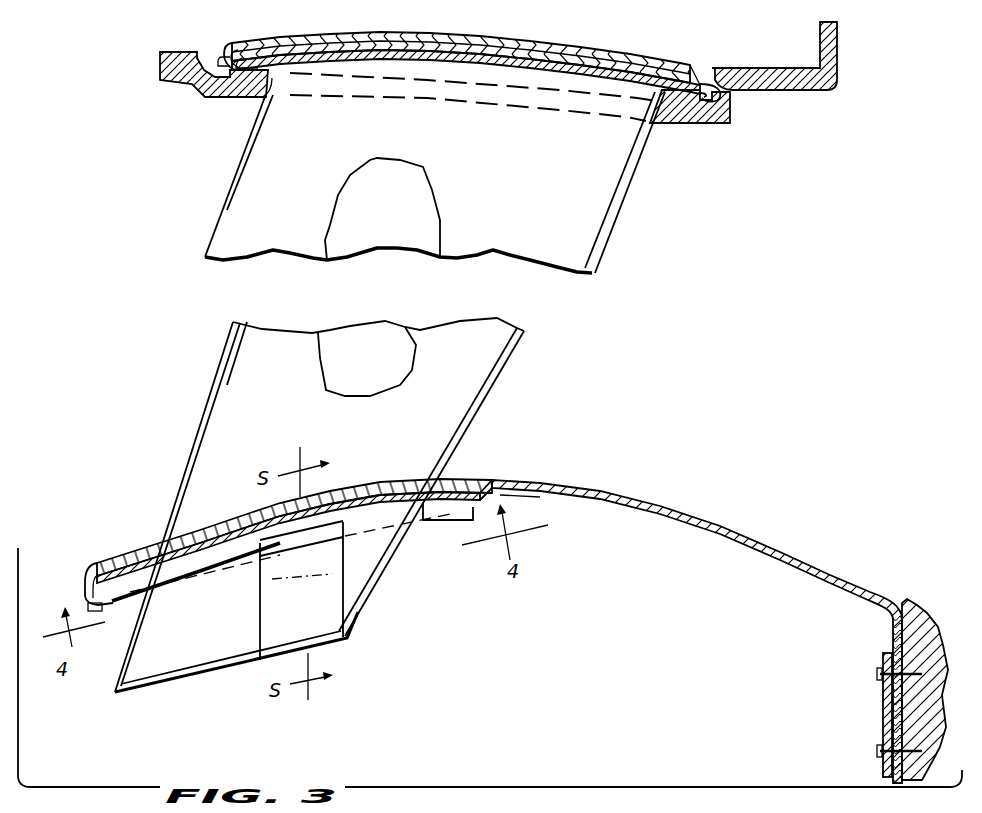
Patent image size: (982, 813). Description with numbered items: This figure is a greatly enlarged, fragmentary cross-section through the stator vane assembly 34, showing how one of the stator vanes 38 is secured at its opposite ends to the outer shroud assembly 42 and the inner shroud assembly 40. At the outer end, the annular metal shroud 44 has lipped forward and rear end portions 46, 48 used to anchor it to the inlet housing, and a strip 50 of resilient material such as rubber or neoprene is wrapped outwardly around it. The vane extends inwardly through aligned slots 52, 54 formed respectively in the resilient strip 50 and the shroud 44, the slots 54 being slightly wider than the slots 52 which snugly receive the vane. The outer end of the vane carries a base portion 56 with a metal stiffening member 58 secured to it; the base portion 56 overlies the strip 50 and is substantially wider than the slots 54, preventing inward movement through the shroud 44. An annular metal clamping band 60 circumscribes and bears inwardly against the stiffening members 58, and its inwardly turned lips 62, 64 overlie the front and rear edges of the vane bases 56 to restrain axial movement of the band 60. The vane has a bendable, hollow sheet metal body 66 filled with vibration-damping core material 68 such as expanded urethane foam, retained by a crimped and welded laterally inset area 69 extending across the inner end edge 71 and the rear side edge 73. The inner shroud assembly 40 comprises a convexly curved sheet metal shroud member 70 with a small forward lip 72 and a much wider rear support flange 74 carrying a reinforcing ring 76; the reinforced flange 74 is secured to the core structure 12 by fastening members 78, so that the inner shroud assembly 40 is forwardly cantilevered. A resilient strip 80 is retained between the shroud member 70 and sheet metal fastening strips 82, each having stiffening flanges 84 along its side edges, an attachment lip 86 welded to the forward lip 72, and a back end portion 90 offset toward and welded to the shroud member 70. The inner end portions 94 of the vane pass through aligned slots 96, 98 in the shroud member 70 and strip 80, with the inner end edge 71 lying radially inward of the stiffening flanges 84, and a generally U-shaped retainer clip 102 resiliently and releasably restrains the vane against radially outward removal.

The core structure 12 is at (918, 612).
The stator vane assembly 34 is at (152, 319).
The stator vanes 38 is at (396, 403).
The inner shroud assembly 40 is at (496, 547).
The outer shroud assembly 42 is at (513, 83).
The outer shroud 44 is at (694, 124).
The forward end portion 46 is at (166, 54).
The rear end portion 48 is at (840, 56).
The resilient strip 50 is at (240, 50).
The slots 52 is at (274, 70).
The slots 54 is at (275, 90).
The base portion 56 is at (664, 92).
The stiffening member 58 is at (455, 44).
The clamping band 60 is at (356, 38).
The inwardly turned lip 62 is at (222, 58).
The inwardly turned lip 64 is at (736, 92).
The sheet metal body 66 is at (426, 319).
The core material 68 is at (379, 277).
The laterally inset area 69 is at (498, 372).
The shroud member 70 is at (686, 516).
The inner end edge 71 is at (140, 693).
The circumferential lip 72 is at (86, 596).
The rear side edge 73 is at (600, 258).
The support flange 74 is at (891, 632).
The reinforcing ring 76 is at (883, 708).
The fastening members 78 is at (879, 674).
The resilient strip 80 is at (486, 492).
The fastening strips 82 is at (462, 522).
The stiffening flange 84 is at (432, 538).
The attachment lip 86 is at (102, 614).
The back end portion 90 is at (540, 501).
The inner end portions 94 is at (178, 660).
The slots 96 is at (160, 540).
The slots 98 is at (170, 572).
The retainer clips 102 is at (350, 587).